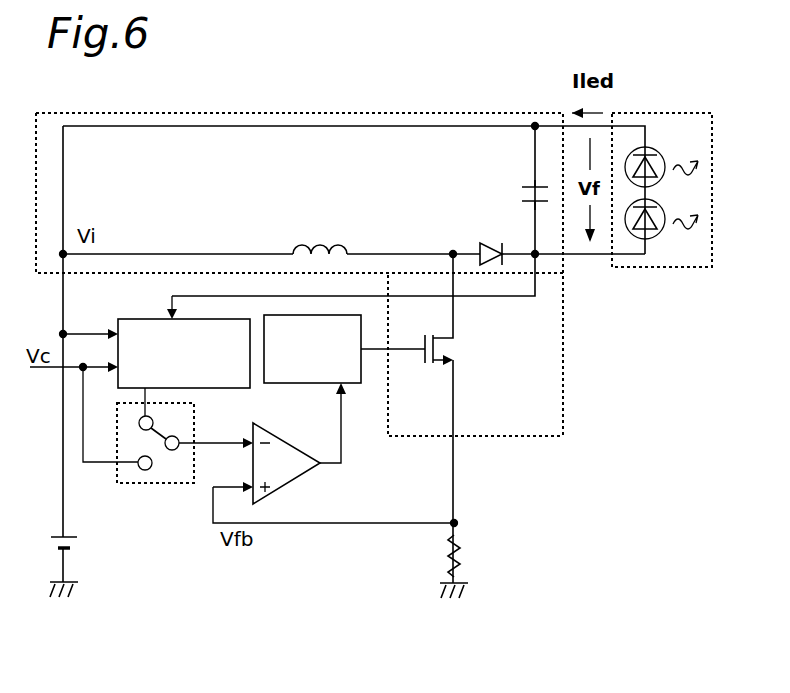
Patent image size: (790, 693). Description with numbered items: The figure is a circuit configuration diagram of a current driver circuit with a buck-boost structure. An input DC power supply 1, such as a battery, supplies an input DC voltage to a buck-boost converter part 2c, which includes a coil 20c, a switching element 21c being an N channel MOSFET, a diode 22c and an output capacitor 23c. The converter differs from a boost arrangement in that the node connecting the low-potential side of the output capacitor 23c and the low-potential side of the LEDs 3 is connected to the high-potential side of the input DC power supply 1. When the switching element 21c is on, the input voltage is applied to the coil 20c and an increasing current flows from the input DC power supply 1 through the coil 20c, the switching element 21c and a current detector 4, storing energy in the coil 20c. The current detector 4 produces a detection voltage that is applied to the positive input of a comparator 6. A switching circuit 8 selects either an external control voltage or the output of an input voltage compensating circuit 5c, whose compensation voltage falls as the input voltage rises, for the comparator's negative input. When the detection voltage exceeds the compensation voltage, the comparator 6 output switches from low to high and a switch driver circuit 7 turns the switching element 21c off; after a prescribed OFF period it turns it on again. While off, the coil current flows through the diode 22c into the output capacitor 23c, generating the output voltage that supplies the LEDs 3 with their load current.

The input DC power supply 1 is at (53, 537).
The buck-boost converter part 2c is at (508, 437).
The LEDs 3 is at (675, 268).
The current detector 4 is at (447, 548).
The input voltage compensating circuit 5c is at (145, 318).
The comparator 6 is at (287, 487).
The switch driver circuit 7 is at (303, 385).
The switching circuit 8 is at (153, 484).
The coil 20c is at (332, 240).
The switching element 21c is at (437, 368).
The diode 22c is at (480, 241).
The output capacitor 23c is at (517, 188).